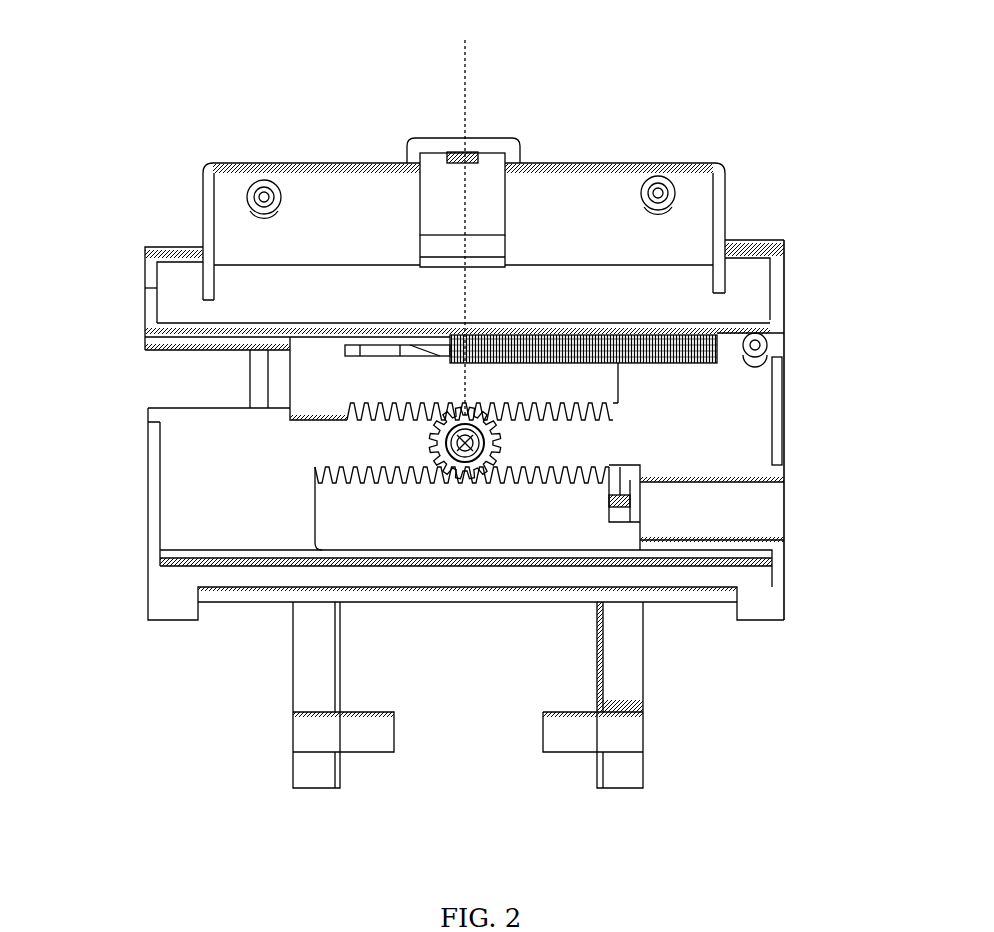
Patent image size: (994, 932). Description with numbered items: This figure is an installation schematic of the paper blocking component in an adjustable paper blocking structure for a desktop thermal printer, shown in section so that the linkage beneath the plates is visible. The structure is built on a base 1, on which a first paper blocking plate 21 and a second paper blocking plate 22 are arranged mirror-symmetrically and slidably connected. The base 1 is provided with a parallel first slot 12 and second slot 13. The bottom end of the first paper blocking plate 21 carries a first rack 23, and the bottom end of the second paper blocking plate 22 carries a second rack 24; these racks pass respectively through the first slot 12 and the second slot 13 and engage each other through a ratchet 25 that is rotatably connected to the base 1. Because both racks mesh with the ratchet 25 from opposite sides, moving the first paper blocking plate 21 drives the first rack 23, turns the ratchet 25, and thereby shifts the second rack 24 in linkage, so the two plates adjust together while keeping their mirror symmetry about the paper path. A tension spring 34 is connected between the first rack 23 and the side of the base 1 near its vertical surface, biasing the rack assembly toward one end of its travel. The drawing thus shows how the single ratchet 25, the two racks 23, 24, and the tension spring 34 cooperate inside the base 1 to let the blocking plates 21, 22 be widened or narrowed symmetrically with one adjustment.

The base 1 is at (783, 412).
The first slot 12 is at (203, 388).
The second slot 13 is at (751, 521).
The first paper blocking plate 21 is at (314, 667).
The second paper blocking plate 22 is at (620, 653).
The first rack 23 is at (337, 373).
The second rack 24 is at (573, 518).
The ratchet 25 is at (463, 213).
The tension spring 34 is at (652, 332).